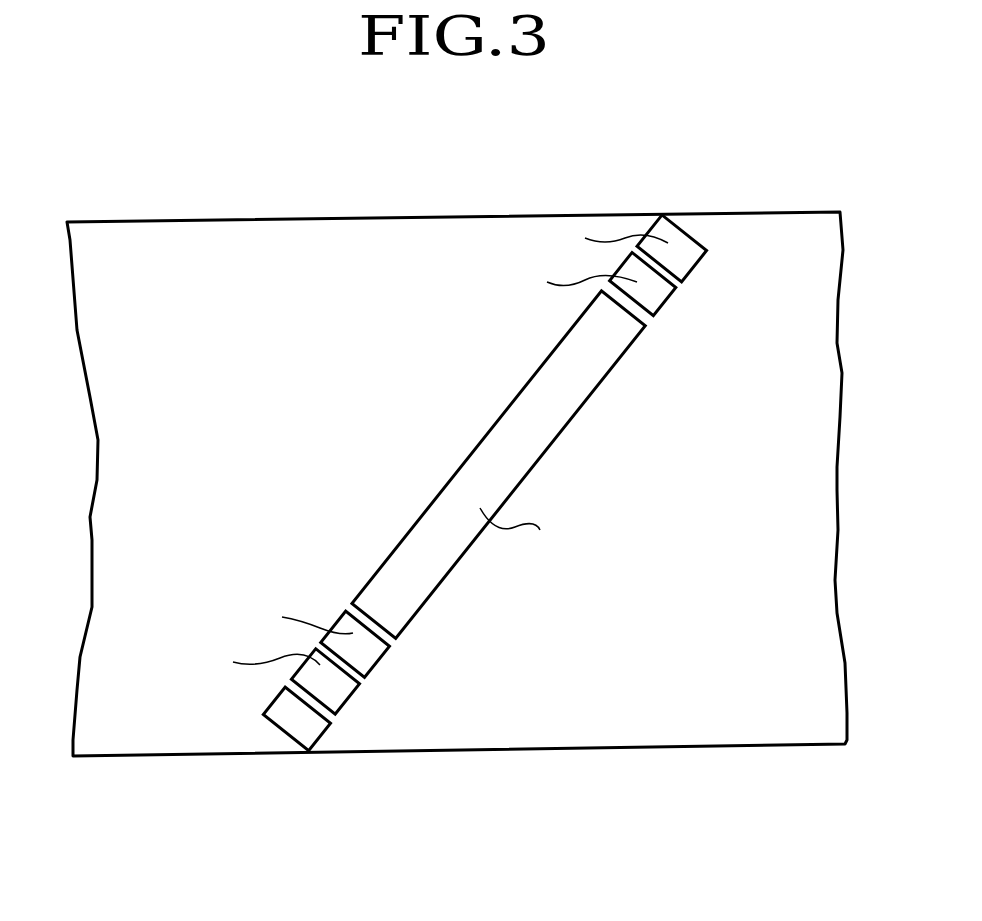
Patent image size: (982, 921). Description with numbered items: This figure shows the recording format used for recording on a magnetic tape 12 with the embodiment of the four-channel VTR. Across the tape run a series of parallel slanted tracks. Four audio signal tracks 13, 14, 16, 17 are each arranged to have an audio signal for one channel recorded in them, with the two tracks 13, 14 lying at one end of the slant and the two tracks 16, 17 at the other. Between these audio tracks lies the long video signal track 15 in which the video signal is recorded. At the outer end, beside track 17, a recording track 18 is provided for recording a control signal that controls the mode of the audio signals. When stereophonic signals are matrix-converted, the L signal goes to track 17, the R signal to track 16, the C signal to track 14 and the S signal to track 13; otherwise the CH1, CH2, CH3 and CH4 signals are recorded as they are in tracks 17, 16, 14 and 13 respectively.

The magnetic tape 12 is at (690, 732).
The audio signal track 13 is at (703, 262).
The audio signal track 14 is at (670, 303).
The video signal track 15 is at (550, 450).
The audio signal track 16 is at (383, 662).
The audio signal track 17 is at (353, 697).
The recording track 18 is at (325, 733).